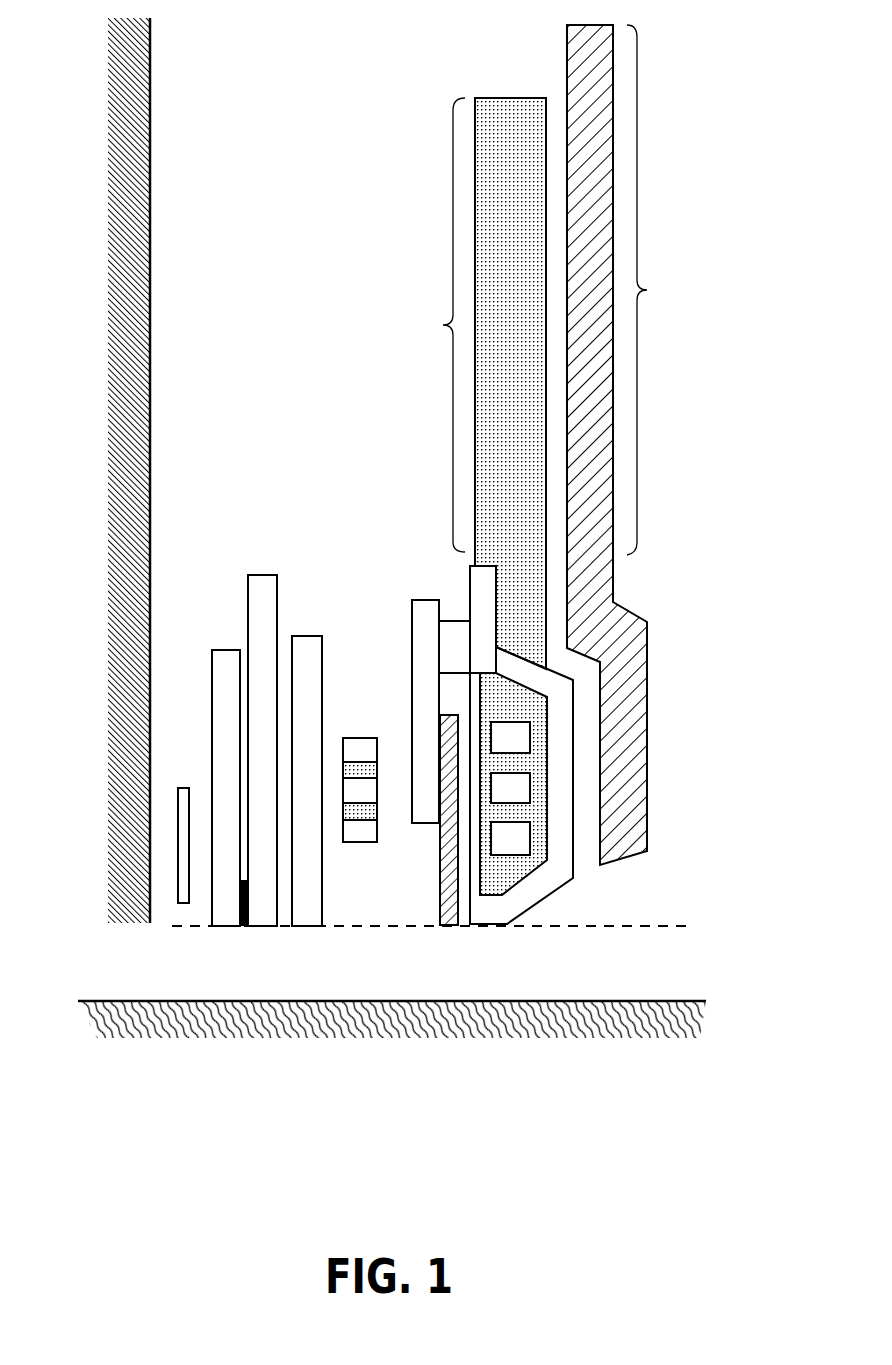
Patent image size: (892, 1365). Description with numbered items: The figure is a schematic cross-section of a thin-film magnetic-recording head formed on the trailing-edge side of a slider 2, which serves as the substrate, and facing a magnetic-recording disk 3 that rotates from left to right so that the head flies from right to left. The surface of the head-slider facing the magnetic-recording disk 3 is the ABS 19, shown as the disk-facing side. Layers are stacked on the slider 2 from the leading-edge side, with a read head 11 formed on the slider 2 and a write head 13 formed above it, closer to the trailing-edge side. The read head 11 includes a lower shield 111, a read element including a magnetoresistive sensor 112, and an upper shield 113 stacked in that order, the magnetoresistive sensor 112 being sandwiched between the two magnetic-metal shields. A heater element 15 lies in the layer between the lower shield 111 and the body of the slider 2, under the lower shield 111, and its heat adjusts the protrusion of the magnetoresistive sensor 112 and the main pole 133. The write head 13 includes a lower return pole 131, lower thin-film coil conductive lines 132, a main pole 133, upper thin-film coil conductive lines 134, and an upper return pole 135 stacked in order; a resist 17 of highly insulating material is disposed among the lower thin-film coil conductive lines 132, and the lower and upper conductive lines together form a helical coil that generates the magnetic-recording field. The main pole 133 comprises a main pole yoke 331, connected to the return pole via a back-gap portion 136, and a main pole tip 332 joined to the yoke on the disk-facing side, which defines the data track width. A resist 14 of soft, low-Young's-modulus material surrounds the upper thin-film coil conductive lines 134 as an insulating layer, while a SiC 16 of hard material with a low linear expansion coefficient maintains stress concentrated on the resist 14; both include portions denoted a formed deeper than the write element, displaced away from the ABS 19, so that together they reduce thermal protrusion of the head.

The slider 2 is at (80, 432).
The magnetic-recording disk 3 is at (665, 1000).
The read head 11 is at (246, 708).
The lower shield 111 is at (215, 650).
The magnetoresistive sensor 112 is at (243, 927).
The upper shield 113 is at (263, 575).
The write head 13 is at (470, 695).
The lower return pole 131 is at (310, 635).
The lower thin-film coil conductive lines 132 is at (343, 840).
The main pole 133 is at (397, 640).
The upper thin-film coil conductive lines 134 is at (510, 858).
The upper return pole 135 is at (553, 895).
The back-gap portion 136 is at (452, 618).
The resist 14 is at (500, 97).
The heater element 15 is at (182, 787).
The SiC 16 is at (567, 58).
The resist 17 is at (343, 767).
The ABS 19 is at (572, 924).
The main pole yoke 331 is at (412, 710).
The main pole tip 332 is at (438, 880).
The portions formed deeper than the write element a is at (543, 290).